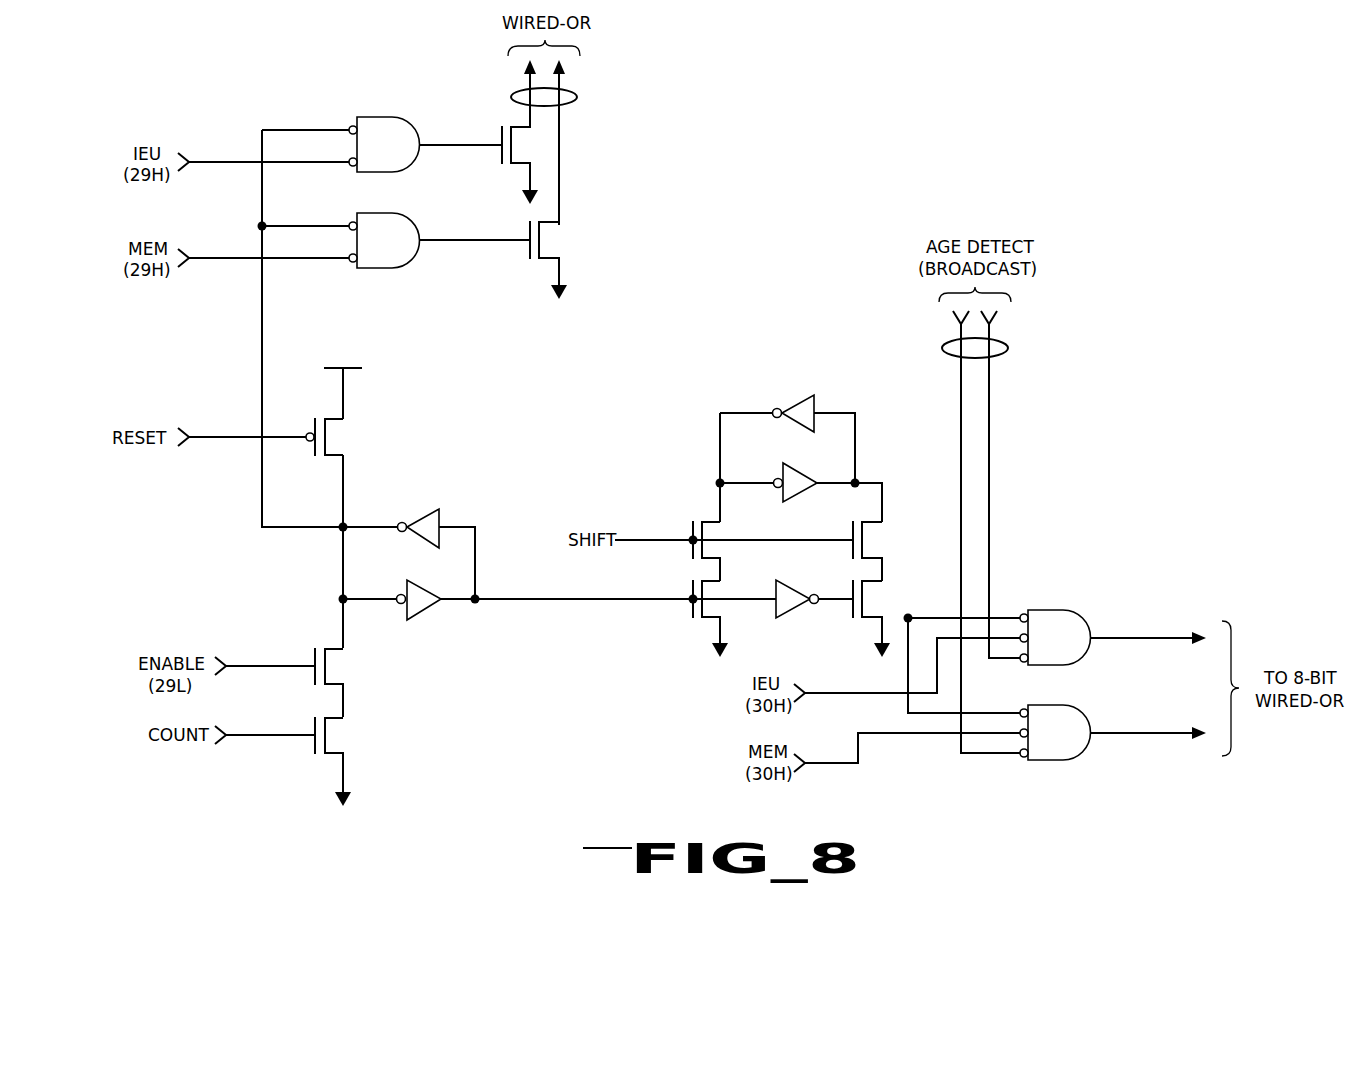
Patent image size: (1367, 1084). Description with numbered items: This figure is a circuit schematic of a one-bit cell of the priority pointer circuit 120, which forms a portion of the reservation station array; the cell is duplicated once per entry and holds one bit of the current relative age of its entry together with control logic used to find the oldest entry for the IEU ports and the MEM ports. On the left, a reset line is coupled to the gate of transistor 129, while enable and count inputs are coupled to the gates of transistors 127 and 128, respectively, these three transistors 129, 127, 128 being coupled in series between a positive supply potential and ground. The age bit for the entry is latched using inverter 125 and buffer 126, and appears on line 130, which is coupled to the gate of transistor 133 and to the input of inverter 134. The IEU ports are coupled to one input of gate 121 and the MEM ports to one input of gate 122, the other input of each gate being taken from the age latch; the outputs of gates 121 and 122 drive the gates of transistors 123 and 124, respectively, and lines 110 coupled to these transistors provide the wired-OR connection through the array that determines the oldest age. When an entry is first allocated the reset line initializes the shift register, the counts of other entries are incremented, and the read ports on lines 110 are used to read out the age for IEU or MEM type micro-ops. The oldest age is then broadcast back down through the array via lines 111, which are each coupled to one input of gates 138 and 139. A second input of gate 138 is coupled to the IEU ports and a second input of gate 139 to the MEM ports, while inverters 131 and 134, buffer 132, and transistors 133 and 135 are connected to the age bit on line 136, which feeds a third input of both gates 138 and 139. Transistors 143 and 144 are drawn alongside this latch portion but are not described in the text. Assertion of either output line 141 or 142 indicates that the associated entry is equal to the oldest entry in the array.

The lines 110 is at (577, 97).
The lines 111 is at (1008, 348).
The priority pointer circuit 120 is at (702, 212).
The gate 121 is at (425, 144).
The gate 122 is at (439, 240).
The transistor 123 is at (500, 176).
The transistor 124 is at (556, 241).
The inverter 125 is at (425, 514).
The buffer 126 is at (425, 617).
The transistor 127 is at (338, 669).
The transistor 128 is at (338, 735).
The transistor 129 is at (336, 438).
The line 130 is at (540, 606).
The inverter 131 is at (797, 400).
The buffer 132 is at (796, 476).
The transistor 133 is at (699, 621).
The inverter 134 is at (796, 587).
The transistor 135 is at (862, 621).
The line 136 is at (908, 561).
The gate 138 is at (1055, 637).
The gate 139 is at (1055, 732).
The line 141 is at (1132, 636).
The line 142 is at (1132, 730).
The transistor 143 is at (698, 562).
The transistor 144 is at (859, 526).